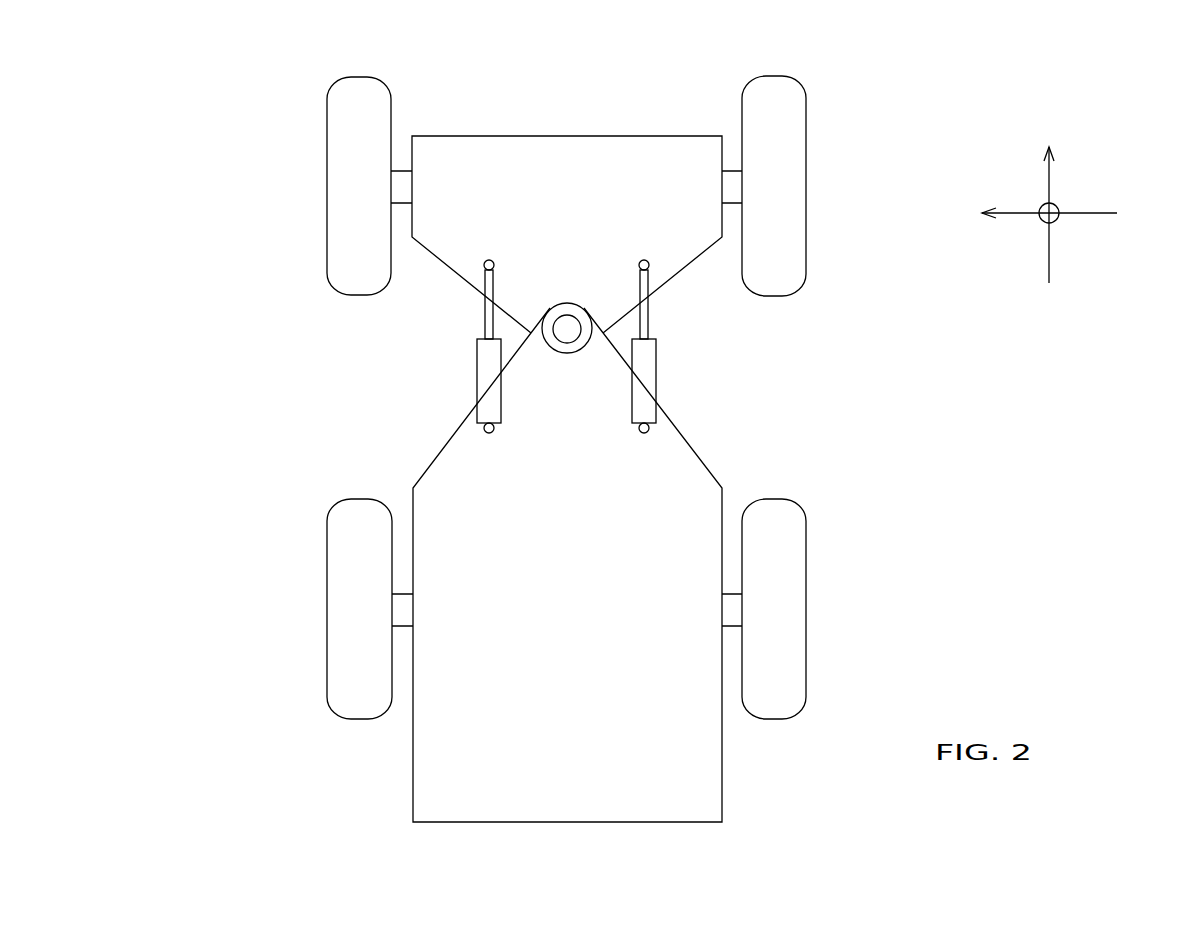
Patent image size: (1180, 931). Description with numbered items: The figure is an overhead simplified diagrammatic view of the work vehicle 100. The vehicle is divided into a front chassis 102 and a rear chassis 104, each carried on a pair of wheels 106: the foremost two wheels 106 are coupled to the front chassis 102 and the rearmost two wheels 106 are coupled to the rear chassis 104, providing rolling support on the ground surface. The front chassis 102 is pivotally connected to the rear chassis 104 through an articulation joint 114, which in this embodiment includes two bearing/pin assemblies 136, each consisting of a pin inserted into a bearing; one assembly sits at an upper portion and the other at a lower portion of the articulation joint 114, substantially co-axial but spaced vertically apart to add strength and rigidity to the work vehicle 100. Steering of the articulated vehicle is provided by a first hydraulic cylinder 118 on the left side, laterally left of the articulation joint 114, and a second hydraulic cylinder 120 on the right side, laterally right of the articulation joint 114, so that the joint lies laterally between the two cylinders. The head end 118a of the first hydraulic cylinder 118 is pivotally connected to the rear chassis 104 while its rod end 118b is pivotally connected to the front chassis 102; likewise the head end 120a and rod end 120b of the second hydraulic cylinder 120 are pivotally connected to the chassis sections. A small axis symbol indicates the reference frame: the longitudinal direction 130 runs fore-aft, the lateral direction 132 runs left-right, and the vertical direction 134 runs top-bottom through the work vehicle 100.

The work vehicle 100 is at (968, 88).
The front chassis 102 is at (556, 121).
The rear chassis 104 is at (546, 828).
The wheels 106 is at (362, 164).
The articulation joint 114 is at (571, 274).
The first hydraulic cylinder 118 is at (419, 348).
The head end 118a is at (486, 430).
The rod end 118b is at (483, 268).
The second hydraulic cylinder 120 is at (708, 350).
The head end 120a is at (652, 430).
The rod end 120b is at (650, 267).
The longitudinal direction 130 is at (1050, 270).
The lateral direction 132 is at (1105, 213).
The vertical direction 134 is at (1052, 220).
The bearing/pin assembly 136 is at (567, 318).